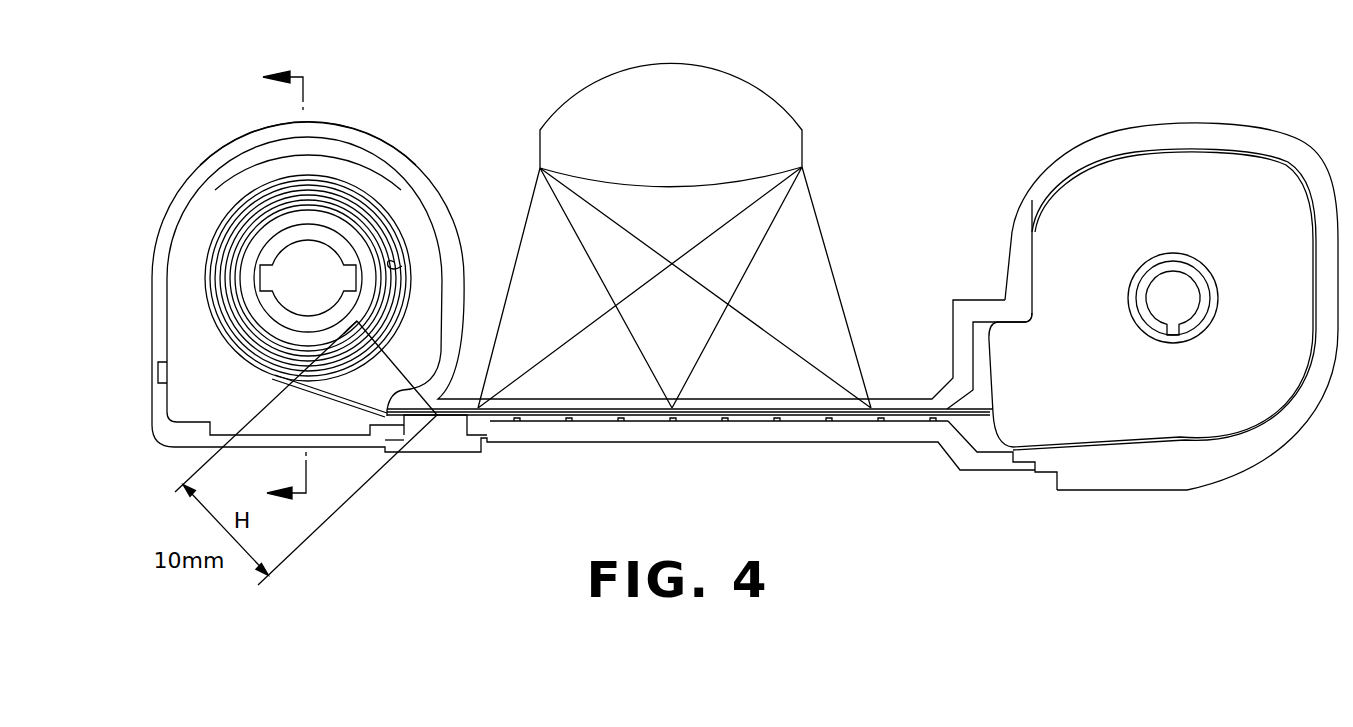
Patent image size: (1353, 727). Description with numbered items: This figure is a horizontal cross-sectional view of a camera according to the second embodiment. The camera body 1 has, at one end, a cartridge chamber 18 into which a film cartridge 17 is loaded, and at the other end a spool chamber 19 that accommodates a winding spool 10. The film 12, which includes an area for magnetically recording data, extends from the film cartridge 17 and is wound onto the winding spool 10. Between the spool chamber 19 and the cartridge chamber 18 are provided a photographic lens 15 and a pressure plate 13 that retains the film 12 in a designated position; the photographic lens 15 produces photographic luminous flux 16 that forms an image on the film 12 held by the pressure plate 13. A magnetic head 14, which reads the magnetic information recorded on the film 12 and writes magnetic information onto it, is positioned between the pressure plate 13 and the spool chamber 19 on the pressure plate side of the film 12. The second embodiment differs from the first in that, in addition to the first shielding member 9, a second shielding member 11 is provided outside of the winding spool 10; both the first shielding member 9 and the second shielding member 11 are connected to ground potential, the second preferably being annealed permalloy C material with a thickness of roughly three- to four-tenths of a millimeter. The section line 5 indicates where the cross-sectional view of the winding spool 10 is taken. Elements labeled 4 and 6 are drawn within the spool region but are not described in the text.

The camera body 1 is at (455, 275).
The film spool core 4 is at (285, 240).
The 5—5 line 5 is at (284, 286).
The spool hub 6 is at (310, 223).
The first shielding member 9 is at (333, 217).
The winding spool 10 is at (357, 213).
The second shielding member 11 is at (394, 262).
The film 12 is at (337, 398).
The pressure plate 13 is at (688, 432).
The magnetic head 14 is at (443, 440).
The photographic lens 15 is at (752, 107).
The photographic luminous flux 16 is at (497, 352).
The film cartridge 17 is at (1062, 267).
The cartridge chamber 18 is at (1072, 195).
The spool chamber 19 is at (328, 132).